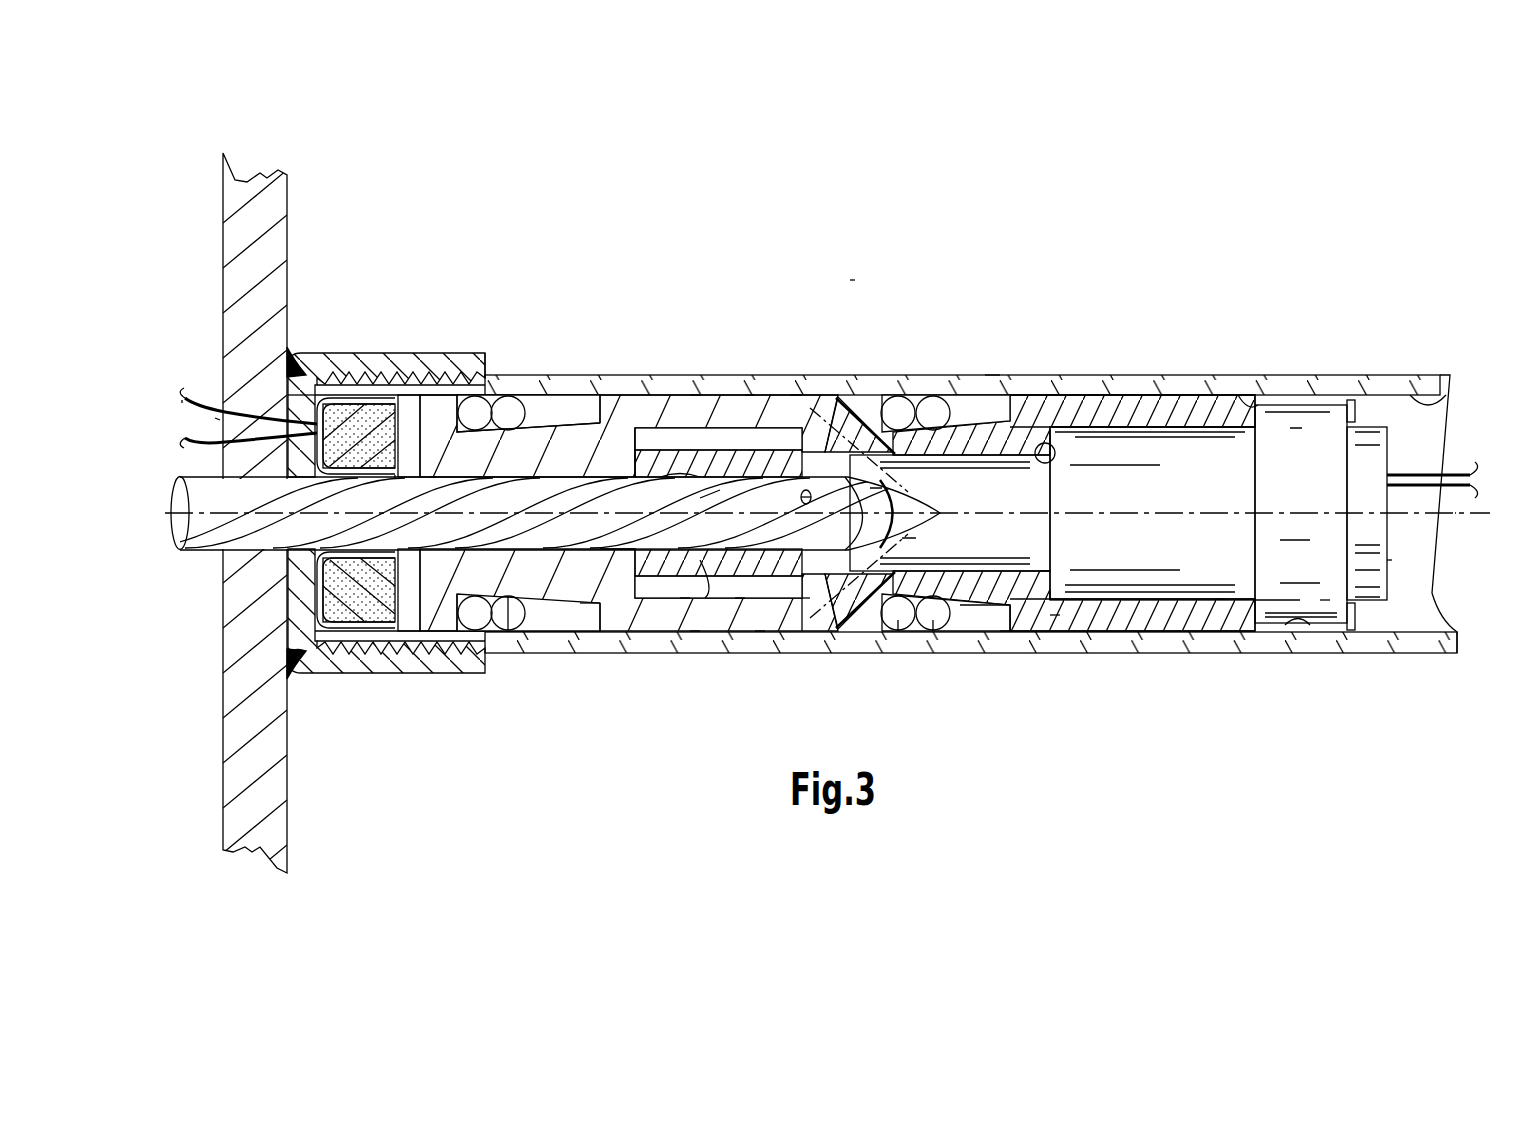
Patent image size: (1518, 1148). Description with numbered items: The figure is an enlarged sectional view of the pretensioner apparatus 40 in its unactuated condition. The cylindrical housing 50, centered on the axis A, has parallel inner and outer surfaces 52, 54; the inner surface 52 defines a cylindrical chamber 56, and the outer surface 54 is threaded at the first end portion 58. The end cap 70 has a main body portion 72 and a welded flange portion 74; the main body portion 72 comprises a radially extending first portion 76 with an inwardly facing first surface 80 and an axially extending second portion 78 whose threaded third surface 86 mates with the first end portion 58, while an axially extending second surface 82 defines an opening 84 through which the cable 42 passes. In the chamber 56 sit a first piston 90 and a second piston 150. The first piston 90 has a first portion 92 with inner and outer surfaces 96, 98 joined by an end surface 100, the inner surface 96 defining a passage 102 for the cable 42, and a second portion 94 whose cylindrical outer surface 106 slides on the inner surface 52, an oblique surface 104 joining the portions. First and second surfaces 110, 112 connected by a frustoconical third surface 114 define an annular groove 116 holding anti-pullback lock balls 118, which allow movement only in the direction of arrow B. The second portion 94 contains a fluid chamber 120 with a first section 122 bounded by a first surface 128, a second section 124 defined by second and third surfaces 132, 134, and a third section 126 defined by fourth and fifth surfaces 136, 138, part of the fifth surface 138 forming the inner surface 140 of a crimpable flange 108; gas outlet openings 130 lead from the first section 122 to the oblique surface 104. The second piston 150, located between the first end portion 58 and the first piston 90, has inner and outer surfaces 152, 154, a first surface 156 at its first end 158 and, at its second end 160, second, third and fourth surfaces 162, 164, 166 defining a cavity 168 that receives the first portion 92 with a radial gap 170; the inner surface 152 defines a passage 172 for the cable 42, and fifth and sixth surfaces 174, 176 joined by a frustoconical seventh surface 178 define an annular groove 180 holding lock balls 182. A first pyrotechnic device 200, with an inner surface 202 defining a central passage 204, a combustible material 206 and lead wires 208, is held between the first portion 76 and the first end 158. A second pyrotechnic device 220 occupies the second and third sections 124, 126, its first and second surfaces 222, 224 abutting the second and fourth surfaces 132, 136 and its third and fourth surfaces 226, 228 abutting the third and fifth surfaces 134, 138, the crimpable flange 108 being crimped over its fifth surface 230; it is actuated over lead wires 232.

The pretensioner apparatus 40 is at (855, 278).
The cable 42 is at (205, 540).
The cylindrical housing 50 is at (990, 370).
The inner surface 52 is at (1442, 395).
The outer surface 54 is at (1185, 375).
The cylindrical chamber 56 is at (407, 612).
The first end portion 58 is at (368, 648).
The end cap 70 is at (336, 352).
The main body portion 72 is at (348, 352).
The flange portion 74 is at (270, 203).
The first portion 76 is at (300, 635).
The second portion 78 is at (345, 668).
The first surface 80 is at (338, 645).
The second surface 82 is at (268, 560).
The opening 84 is at (268, 450).
The third surface 86 is at (500, 430).
The first piston 90 is at (1070, 390).
The first portion 92 is at (792, 395).
The second portion 94 is at (1058, 618).
The inner surface 96 is at (757, 395).
The outer surface 98 is at (712, 450).
The end surface 100 is at (620, 450).
The passage 102 is at (770, 482).
The oblique surface 104 is at (830, 395).
The cylindrical outer surface 106 is at (1140, 610).
The crimpable flange 108 is at (1355, 618).
The first surface 110 is at (900, 622).
The second surface 112 is at (1003, 640).
The frustoconical third surface 114 is at (990, 615).
The annular groove 116 is at (965, 612).
The anti-pullback lock balls 118 is at (935, 622).
The fluid chamber 120 is at (950, 513).
The first section 122 is at (1030, 430).
The second section 124 is at (1218, 570).
The third section 126 is at (1322, 595).
The first surface 128 is at (1040, 585).
The gas outlet openings 130 is at (865, 395).
The second surface 132 is at (1052, 595).
The third surface 134 is at (1150, 600).
The fourth surface 136 is at (1258, 612).
The fifth surface 138 is at (1282, 625).
The inner surface 140 is at (1335, 600).
The second piston 150 is at (752, 635).
The inner surface 152 is at (590, 452).
The outer surface 154 is at (690, 395).
The first surface 156 is at (440, 410).
The first end 158 is at (455, 395).
The second end 160 is at (802, 640).
The second surface 162 is at (815, 630).
The third surface 164 is at (735, 600).
The fourth surface 166 is at (655, 605).
The cylindrical cavity 168 is at (680, 640).
The radial gap 170 is at (710, 595).
The passage 172 is at (480, 470).
The fifth surface 174 is at (470, 618).
The sixth surface 176 is at (600, 600).
The frustoconical seventh surface 178 is at (570, 612).
The annular groove 180 is at (552, 620).
The anti-pullback lock balls 182 is at (508, 620).
The first pyrotechnic device 200 is at (370, 385).
The cylindrical inner surface 202 is at (380, 474).
The central passage 204 is at (372, 478).
The material 206 is at (300, 420).
The lead wires 208 is at (205, 430).
The second pyrotechnic device 220 is at (1392, 560).
The first surface 222 is at (1055, 457).
The second surface 224 is at (1250, 400).
The third surface 226 is at (1095, 395).
The fourth surface 228 is at (1312, 400).
The fifth surface 230 is at (1410, 395).
The lead wires 232 is at (1450, 478).
The axis A is at (1428, 513).
The arrow B is at (835, 233).